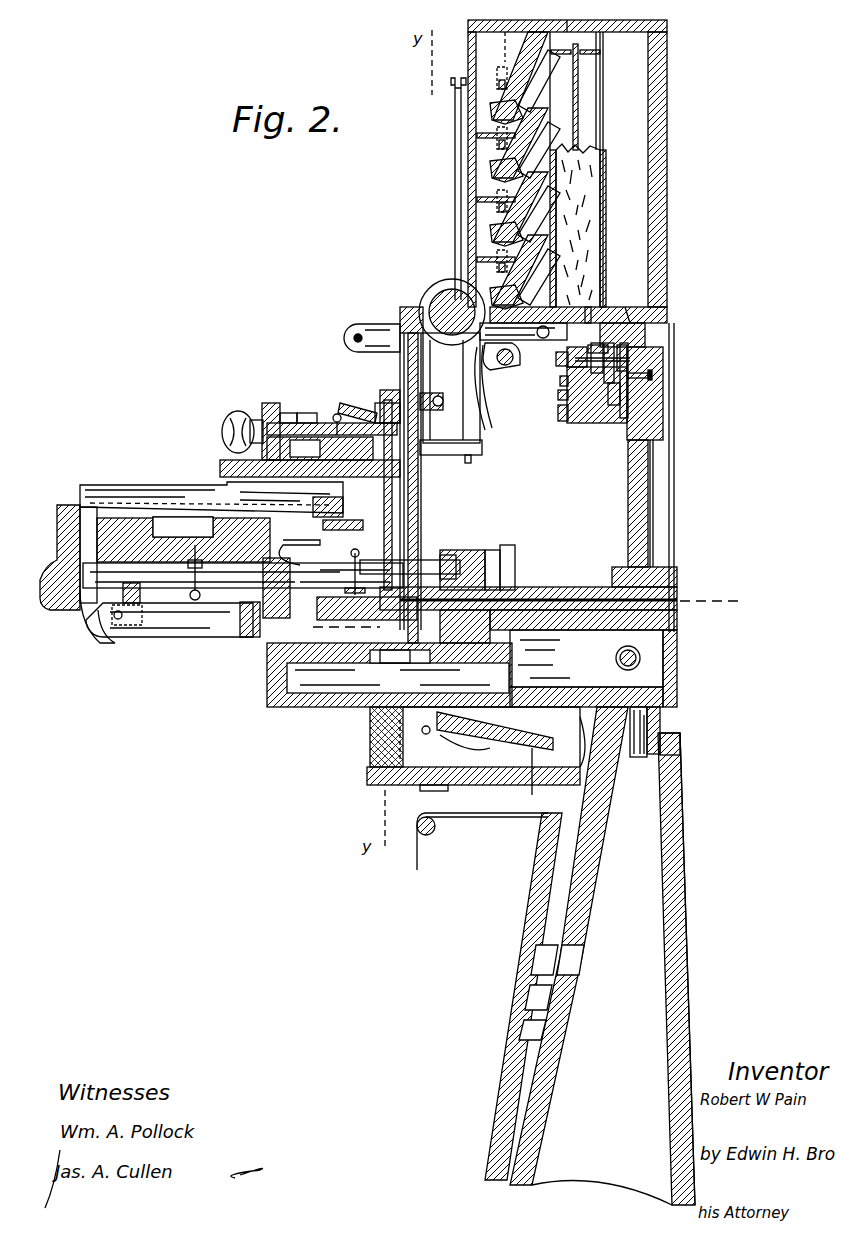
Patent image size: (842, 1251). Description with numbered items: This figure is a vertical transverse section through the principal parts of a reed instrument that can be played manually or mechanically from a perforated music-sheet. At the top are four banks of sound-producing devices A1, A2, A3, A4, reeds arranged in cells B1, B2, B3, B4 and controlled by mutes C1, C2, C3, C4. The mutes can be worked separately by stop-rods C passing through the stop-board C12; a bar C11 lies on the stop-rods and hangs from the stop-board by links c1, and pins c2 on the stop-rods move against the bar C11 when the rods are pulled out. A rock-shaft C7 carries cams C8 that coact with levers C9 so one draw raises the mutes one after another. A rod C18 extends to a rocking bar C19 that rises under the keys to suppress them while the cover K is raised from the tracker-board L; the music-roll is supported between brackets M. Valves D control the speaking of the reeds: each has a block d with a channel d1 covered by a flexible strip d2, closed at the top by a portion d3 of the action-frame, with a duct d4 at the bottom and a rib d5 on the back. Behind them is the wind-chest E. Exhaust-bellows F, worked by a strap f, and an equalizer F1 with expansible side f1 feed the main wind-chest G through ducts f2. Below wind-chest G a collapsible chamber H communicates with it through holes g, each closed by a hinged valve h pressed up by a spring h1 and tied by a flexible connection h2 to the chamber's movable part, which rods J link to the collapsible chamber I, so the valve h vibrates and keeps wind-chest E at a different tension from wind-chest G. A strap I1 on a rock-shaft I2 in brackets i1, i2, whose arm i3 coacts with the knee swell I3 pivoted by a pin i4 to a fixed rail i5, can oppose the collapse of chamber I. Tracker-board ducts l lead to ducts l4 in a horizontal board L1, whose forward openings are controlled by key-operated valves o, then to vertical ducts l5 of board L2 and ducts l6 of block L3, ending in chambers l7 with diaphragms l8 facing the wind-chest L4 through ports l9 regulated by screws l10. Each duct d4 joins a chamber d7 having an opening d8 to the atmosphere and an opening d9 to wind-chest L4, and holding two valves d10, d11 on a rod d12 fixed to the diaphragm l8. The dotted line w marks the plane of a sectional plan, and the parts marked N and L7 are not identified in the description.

The sound-producing device A1 is at (497, 262).
The sound-producing device A2 is at (497, 202).
The sound-producing device A3 is at (497, 138).
The sound-producing device A4 is at (497, 78).
The cell B1 is at (528, 262).
The cell B2 is at (528, 193).
The cell B3 is at (527, 137).
The cell B4 is at (530, 67).
The mute C1 is at (490, 295).
The mute C2 is at (490, 232).
The mute C3 is at (490, 170).
The mute C4 is at (490, 110).
The stop-rod C is at (240, 411).
The stop-board C12 is at (272, 403).
The link c1 is at (288, 413).
The bar C11 is at (318, 404).
The pin c2 is at (337, 414).
The rod C18 is at (190, 485).
The rocking bar C19 is at (165, 520).
The rock-shaft C7 is at (492, 387).
The cam C8 is at (498, 370).
The lever C9 is at (470, 400).
The valve D is at (603, 122).
The block d is at (596, 87).
The channel d1 is at (575, 235).
The flexible strip d2 is at (585, 258).
The portion of action-frame d3 is at (568, 20).
The duct d4 is at (605, 300).
The bridge or rib d5 is at (578, 70).
The chamber d7 is at (543, 345).
The opening d8 is at (556, 360).
The opening d9 is at (628, 302).
The valve d10 is at (558, 415).
The valve d11 is at (558, 395).
The rod d12 is at (560, 380).
The wind-chest for the sound-producing devices E is at (590, 225).
The exhaust-bellows F is at (530, 875).
The equalizer F1 is at (602, 956).
The strap f is at (470, 818).
The expansible side f1 is at (690, 900).
The duct f2 is at (660, 720).
The main wind-chest G is at (586, 658).
The hole g is at (530, 687).
The chamber H is at (450, 790).
The valve h is at (487, 730).
The spring h1 is at (475, 745).
The flexible connection h2 is at (534, 755).
The chamber I is at (275, 655).
The strap I1 is at (495, 550).
The rock-shaft I2 is at (440, 555).
The knee swell I3 is at (160, 637).
The bracket i1 is at (485, 570).
The bracket i2 is at (95, 572).
The arm i3 is at (123, 598).
The pin i4 is at (240, 600).
The fixed rail i5 is at (290, 600).
The rod J is at (370, 740).
The cover K is at (404, 307).
The tracker-board L is at (400, 358).
The horizontal board L1 is at (528, 587).
The board L2 is at (628, 497).
The block L3 is at (575, 423).
The wind-chest L4 is at (640, 400).
The frame wall L7 is at (660, 658).
The duct l is at (412, 482).
The duct l4 is at (548, 598).
The vertical duct l5 is at (653, 500).
The vertical duct l6 is at (620, 393).
The chamber l7 is at (608, 349).
The flexible diaphragm l8 is at (622, 350).
The port l9 is at (630, 359).
The screw l10 is at (652, 375).
The bracket M is at (360, 324).
The roller N is at (460, 280).
The valve o is at (346, 575).
The dotted line w is at (527, 615).